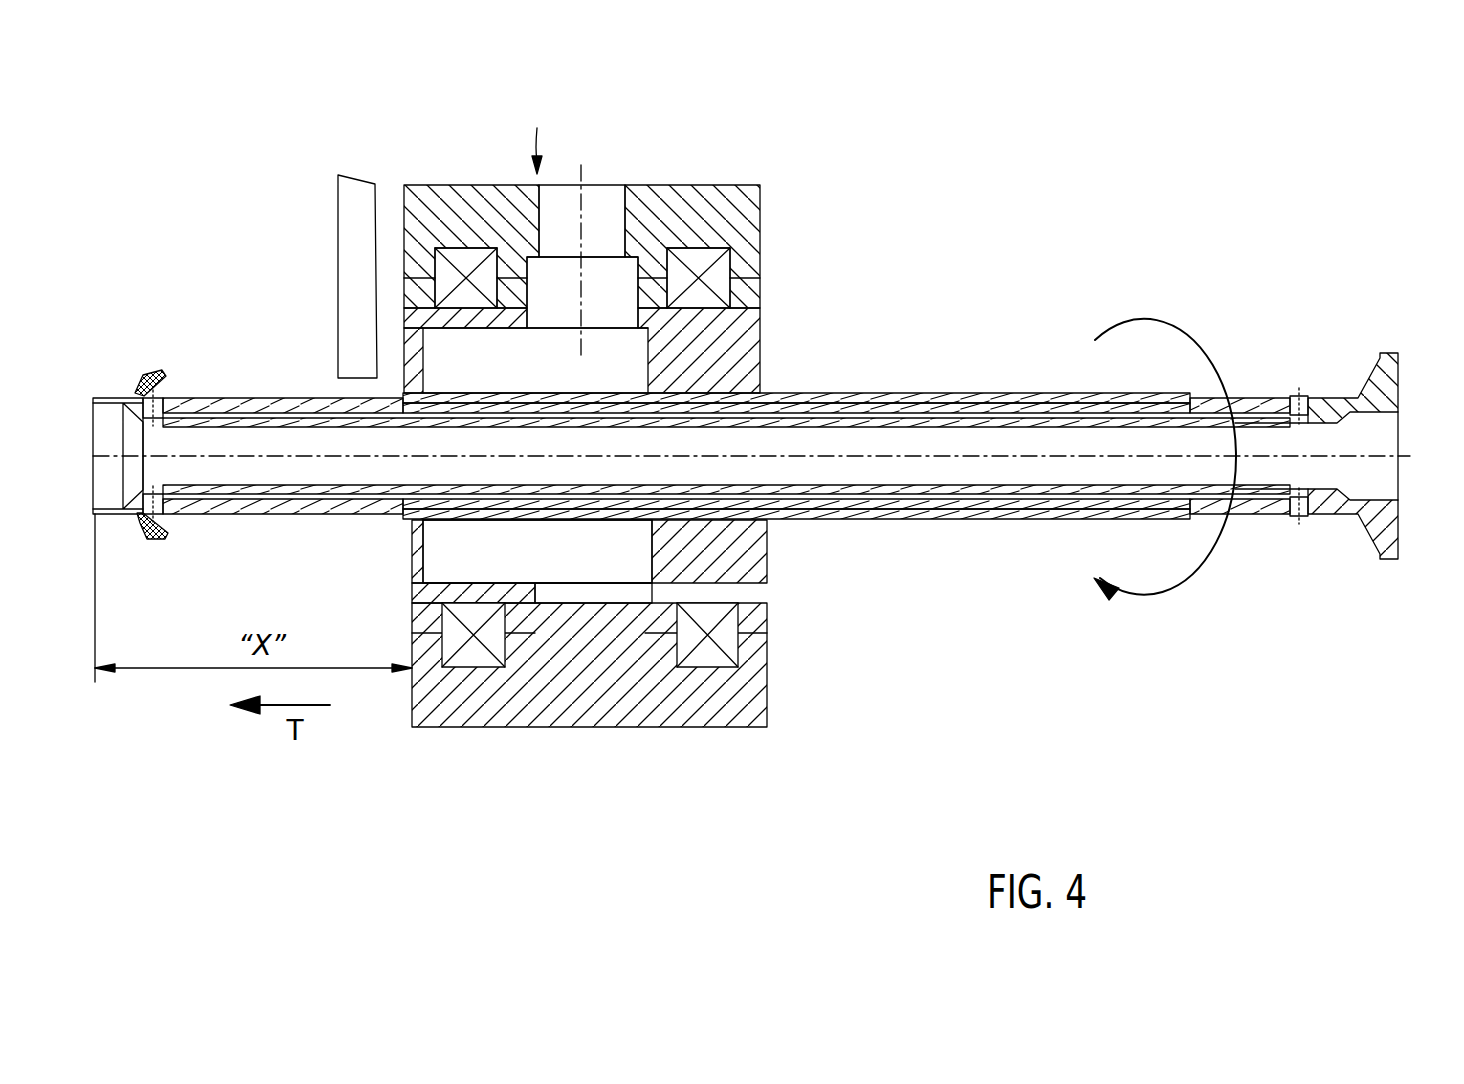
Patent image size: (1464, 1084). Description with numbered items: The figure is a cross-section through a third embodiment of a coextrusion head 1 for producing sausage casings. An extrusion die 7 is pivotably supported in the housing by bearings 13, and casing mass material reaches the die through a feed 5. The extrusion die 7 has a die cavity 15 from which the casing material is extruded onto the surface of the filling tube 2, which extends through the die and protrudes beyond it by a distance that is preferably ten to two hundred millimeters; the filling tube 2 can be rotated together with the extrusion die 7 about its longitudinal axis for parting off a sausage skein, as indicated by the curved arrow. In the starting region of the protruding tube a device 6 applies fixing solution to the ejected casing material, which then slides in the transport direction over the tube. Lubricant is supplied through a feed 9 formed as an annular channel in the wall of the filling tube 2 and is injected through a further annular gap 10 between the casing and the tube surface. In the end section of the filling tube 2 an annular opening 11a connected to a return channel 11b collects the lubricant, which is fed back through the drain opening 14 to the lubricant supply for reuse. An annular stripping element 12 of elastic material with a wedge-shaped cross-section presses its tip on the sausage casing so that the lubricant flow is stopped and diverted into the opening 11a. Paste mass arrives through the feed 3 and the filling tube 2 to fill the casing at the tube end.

The coextrusion head 1 is at (536, 136).
The filling tube 2 is at (862, 396).
The feed 3 is at (1403, 432).
The feed 5 is at (609, 200).
The device 6 is at (346, 195).
The extrusion die 7 is at (753, 552).
The feed 9 is at (1036, 396).
The further annular gap 10 is at (398, 395).
The annular opening 11a is at (157, 397).
The return channel 11b is at (203, 512).
The stripping element 12 is at (141, 517).
The bearings 13 is at (706, 656).
The drain opening 14 is at (1300, 394).
The die cavity 15 is at (570, 560).